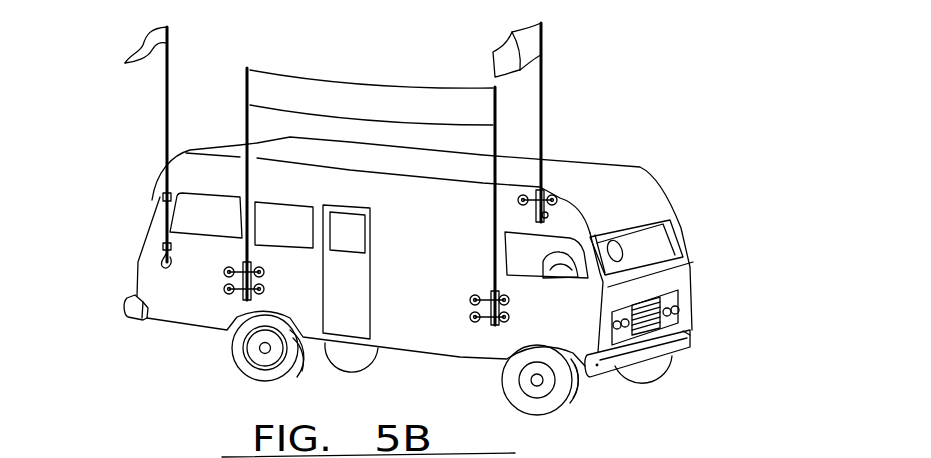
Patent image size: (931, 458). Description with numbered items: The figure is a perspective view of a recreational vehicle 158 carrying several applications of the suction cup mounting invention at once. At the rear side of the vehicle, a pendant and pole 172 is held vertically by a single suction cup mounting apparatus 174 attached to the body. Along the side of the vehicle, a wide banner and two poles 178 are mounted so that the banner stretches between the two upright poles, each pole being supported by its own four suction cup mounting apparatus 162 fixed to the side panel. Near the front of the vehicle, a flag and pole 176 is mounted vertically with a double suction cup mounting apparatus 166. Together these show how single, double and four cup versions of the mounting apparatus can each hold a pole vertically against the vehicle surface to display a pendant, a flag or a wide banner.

The recreational vehicle 158 is at (683, 232).
The four suction cup mounting apparatus 162 is at (223, 287).
The double suction cup mounting apparatus 166 is at (562, 200).
The pendant and pole 172 is at (165, 150).
The single suction cup mounting apparatus 174 is at (162, 265).
The flag and pole 176 is at (545, 130).
The wide banner and two poles 178 is at (333, 82).